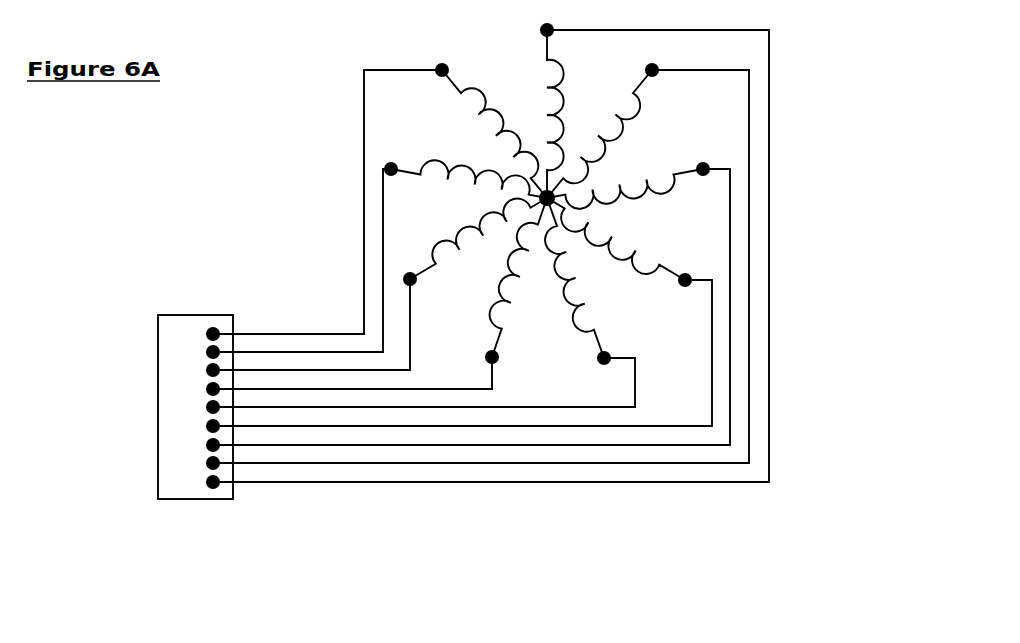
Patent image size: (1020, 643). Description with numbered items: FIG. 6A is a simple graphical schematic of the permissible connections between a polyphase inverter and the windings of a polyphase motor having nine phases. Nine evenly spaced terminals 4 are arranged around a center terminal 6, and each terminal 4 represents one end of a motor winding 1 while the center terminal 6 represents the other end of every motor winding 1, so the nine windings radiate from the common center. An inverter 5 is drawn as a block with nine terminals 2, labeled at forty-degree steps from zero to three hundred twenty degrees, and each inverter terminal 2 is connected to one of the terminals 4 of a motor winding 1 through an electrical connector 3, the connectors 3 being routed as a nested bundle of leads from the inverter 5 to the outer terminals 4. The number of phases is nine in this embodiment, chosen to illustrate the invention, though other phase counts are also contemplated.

The motor winding 1 is at (657, 190).
The inverter terminal 2 is at (156, 334).
The electrical connector 3 is at (769, 410).
The terminal 4 is at (652, 70).
The inverter 5 is at (233, 499).
The center terminal 6 is at (547, 198).